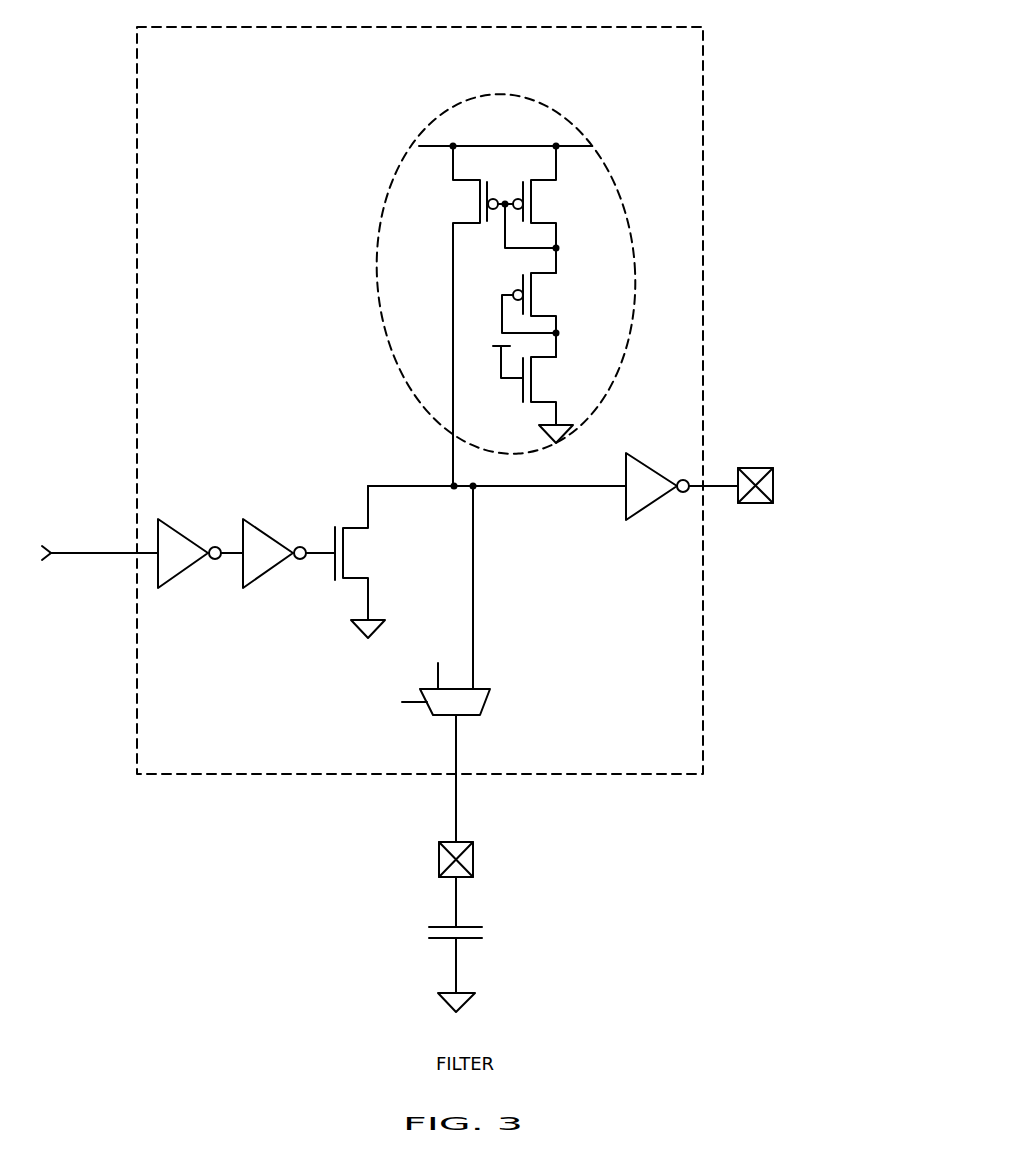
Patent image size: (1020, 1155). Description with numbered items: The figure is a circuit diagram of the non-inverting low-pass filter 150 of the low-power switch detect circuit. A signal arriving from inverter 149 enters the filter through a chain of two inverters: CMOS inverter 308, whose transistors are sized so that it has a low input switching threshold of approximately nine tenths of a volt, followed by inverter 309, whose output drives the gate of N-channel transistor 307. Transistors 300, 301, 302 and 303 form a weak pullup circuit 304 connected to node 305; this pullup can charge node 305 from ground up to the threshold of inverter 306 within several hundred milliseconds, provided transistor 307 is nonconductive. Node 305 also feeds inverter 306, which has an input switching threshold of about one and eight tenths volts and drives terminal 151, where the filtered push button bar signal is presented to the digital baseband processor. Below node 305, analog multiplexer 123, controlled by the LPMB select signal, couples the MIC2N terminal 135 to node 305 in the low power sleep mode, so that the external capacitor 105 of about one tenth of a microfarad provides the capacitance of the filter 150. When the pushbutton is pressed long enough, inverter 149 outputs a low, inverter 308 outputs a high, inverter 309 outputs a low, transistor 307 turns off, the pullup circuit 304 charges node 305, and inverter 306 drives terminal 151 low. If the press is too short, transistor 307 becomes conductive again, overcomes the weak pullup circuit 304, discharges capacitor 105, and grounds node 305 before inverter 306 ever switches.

The filter 150 is at (650, 27).
The weak pullup circuit 304 is at (513, 95).
The transistor 300 is at (466, 207).
The transistor 301 is at (549, 207).
The transistor 302 is at (547, 288).
The transistor 303 is at (547, 373).
The node 305 is at (408, 484).
The inverter 306 is at (653, 502).
The N-channel transistor 307 is at (365, 550).
The CMOS inverter 308 is at (178, 528).
The inverter 309 is at (264, 528).
The inverter 149 is at (95, 516).
The terminal 151 is at (757, 504).
The analog multiplexer 123 is at (477, 717).
The MIC2N terminal 135 is at (438, 859).
The capacitor 105 is at (428, 930).